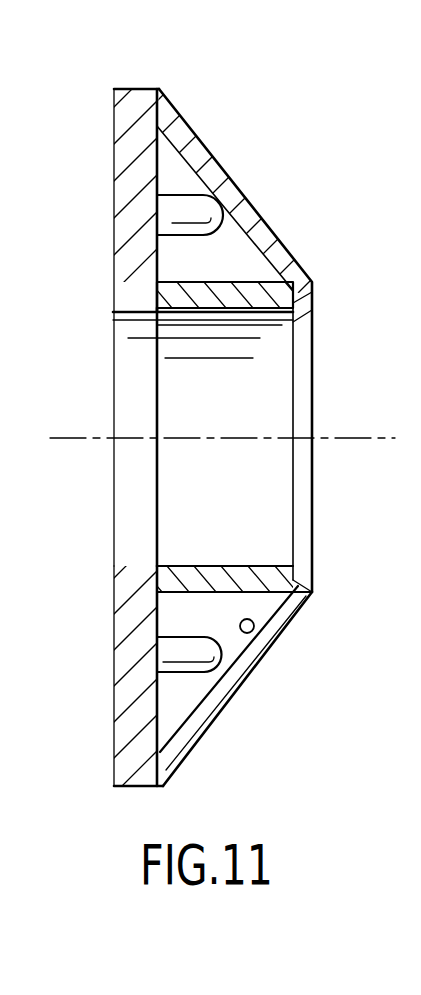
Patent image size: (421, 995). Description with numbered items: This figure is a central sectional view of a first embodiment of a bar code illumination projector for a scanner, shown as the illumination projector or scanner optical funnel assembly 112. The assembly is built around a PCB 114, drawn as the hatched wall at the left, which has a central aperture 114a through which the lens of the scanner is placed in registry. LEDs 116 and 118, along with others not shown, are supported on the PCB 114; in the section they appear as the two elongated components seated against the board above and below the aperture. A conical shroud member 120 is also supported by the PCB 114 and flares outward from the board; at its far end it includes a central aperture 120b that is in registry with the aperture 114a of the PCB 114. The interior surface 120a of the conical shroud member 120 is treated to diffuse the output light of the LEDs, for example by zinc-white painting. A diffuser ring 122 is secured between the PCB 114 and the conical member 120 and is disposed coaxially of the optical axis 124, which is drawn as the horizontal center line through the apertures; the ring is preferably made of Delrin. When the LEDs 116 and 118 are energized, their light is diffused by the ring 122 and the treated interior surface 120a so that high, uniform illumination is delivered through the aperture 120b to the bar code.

The illumination projector or scanner optical funnel assembly 112 is at (216, 404).
The PCB 114 is at (122, 243).
The central aperture 114a is at (137, 493).
The LED 116 is at (172, 230).
The LED 118 is at (188, 638).
The conical shroud member 120 is at (208, 152).
The interior surface 120a is at (253, 630).
The central aperture 120b is at (302, 415).
The diffuser ring 122 is at (263, 313).
The optical axis 124 is at (255, 440).